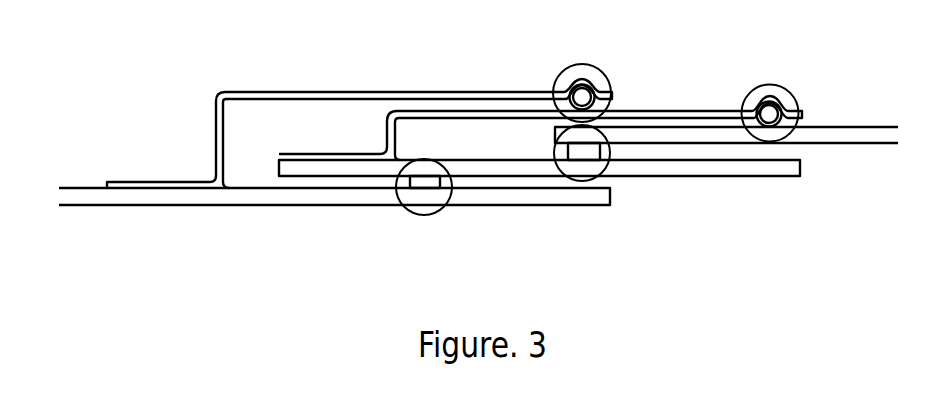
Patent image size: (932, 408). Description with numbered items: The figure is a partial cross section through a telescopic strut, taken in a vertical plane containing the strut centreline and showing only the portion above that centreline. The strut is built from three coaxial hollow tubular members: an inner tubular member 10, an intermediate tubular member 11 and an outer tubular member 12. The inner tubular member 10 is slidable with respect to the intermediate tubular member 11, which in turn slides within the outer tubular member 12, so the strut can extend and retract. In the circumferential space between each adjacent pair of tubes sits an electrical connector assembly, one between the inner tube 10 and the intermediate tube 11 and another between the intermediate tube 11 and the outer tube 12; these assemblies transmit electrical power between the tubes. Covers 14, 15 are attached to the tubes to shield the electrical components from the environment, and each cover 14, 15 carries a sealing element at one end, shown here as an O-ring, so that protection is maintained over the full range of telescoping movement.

The inner tubular member 10 is at (238, 206).
The intermediate tubular member 11 is at (735, 178).
The outer tubular member 12 is at (868, 145).
The cover 14 is at (293, 85).
The cover 15 is at (423, 106).